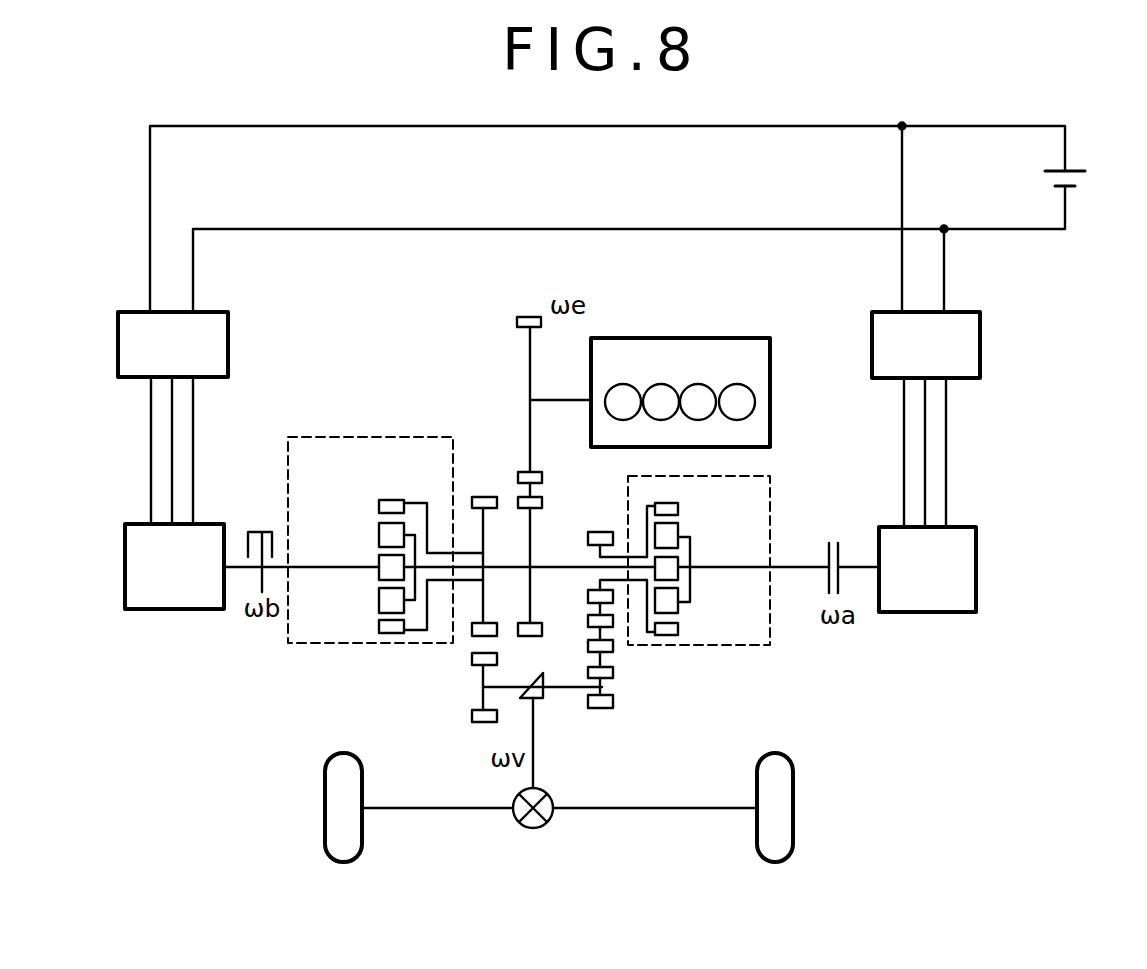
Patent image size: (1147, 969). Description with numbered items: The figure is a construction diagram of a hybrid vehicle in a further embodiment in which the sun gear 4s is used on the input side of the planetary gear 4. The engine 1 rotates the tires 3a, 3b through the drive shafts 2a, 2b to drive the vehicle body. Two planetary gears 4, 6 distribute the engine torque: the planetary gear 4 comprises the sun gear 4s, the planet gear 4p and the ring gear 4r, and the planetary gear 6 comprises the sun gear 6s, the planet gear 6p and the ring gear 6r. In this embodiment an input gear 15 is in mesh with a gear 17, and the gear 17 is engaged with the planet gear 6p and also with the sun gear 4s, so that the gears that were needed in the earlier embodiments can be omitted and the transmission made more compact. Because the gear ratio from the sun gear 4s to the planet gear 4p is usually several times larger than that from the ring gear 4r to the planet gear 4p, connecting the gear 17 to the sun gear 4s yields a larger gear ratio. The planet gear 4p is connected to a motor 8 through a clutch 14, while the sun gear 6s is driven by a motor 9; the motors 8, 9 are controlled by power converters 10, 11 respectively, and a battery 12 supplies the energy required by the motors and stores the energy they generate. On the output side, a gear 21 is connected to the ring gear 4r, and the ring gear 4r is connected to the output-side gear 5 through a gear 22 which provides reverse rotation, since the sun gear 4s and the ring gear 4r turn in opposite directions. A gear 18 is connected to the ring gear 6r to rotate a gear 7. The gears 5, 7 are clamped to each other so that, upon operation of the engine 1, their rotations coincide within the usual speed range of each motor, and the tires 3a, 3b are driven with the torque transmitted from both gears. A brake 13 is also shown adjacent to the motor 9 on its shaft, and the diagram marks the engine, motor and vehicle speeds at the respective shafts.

The engine 1 is at (697, 338).
The drive shaft 2a is at (443, 808).
The drive shaft 2b is at (652, 808).
The tire 3a is at (345, 753).
The tire 3b is at (773, 753).
The planetary gear 4 is at (770, 495).
The ring gear 4r is at (678, 507).
The sun gear 4s is at (678, 565).
The planet gear 4p is at (678, 605).
The gear 5 is at (600, 708).
The planetary gear 6 is at (378, 436).
The ring gear 6r is at (379, 506).
The sun gear 6s is at (379, 563).
The planet gear 6p is at (379, 597).
The gear 7 is at (472, 660).
The motor 8 is at (976, 556).
The motor 9 is at (178, 609).
The power converter 10 is at (980, 338).
The power converter 11 is at (228, 345).
The battery 12 is at (1084, 171).
The brake 13 is at (264, 530).
The clutch 14 is at (836, 541).
The gear 15 is at (517, 322).
The gear 17 is at (542, 500).
The gear 18 is at (484, 497).
The gear 21 is at (602, 532).
The gear 22 is at (613, 647).